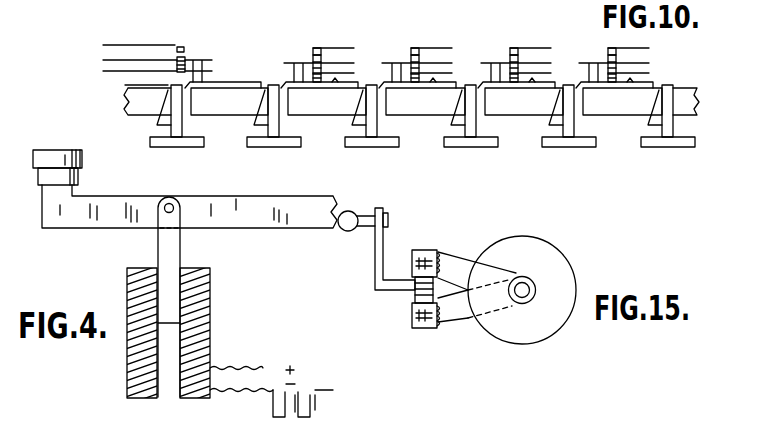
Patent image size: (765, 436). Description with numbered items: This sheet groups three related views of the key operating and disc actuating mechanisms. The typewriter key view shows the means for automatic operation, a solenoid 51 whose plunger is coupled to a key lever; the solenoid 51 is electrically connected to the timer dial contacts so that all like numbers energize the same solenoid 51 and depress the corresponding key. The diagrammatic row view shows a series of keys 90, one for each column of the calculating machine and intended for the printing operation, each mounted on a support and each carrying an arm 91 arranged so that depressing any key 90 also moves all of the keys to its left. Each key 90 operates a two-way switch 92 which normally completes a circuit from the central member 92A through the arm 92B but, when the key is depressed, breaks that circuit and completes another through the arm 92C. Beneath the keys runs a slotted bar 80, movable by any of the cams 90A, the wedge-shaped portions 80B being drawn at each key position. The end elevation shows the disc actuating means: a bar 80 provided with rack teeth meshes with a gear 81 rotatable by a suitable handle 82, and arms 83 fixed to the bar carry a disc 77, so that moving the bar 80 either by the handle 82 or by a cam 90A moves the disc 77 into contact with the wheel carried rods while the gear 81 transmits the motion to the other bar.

In FIG. 10, the bar 80 is at (693, 97).
In FIG. 15, the bar 80 is at (413, 260).
In FIG. 10, the key 90 is at (177, 147).
In FIG. 10, the cam 90A is at (353, 122).
In FIG. 10, the arm 91 is at (250, 82).
In FIG. 10, the two-way switch 92 is at (186, 57).
In FIG. 10, the central member 92A is at (98, 60).
In FIG. 10, the arm 92B is at (112, 77).
In FIG. 10, the arm 92C is at (110, 43).
In FIG. 10, the wedge 80B is at (558, 98).
In FIG. 4, the solenoid 51 is at (210, 323).
In FIG. 15, the disc 77 is at (572, 277).
In FIG. 15, the gear 81 is at (412, 297).
In FIG. 15, the handle 82 is at (374, 258).
In FIG. 15, the arm 83 is at (465, 255).